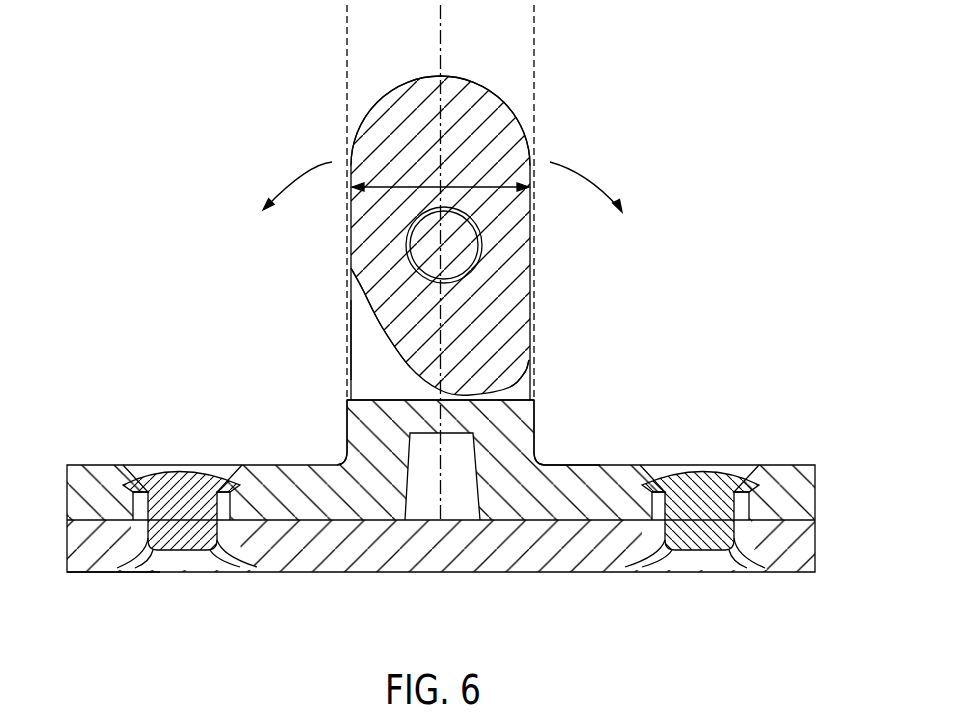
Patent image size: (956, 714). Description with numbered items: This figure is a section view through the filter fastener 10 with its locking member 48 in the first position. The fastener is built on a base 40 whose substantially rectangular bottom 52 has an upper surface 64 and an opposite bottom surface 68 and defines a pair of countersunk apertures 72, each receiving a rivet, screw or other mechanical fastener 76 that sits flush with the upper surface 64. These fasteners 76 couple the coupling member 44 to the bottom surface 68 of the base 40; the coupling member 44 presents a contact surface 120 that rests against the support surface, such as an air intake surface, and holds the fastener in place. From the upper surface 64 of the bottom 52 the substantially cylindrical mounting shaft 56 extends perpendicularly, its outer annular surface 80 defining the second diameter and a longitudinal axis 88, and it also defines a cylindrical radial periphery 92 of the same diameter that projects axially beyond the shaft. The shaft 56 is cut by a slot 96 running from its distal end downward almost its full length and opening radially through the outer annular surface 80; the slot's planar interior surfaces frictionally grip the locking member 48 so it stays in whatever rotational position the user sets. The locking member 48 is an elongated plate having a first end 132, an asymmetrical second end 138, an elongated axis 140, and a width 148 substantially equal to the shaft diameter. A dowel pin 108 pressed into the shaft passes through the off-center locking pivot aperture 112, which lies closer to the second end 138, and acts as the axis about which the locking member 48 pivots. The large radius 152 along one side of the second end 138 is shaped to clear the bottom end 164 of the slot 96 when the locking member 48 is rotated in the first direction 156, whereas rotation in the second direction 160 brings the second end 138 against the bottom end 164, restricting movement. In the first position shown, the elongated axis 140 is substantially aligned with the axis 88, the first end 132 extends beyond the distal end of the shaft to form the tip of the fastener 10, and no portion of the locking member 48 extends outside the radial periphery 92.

The filter fastener 10 is at (630, 68).
The base 40 is at (300, 475).
The coupling member 44 is at (805, 545).
The locking member 48 is at (457, 88).
The bottom 52 is at (587, 473).
The mounting shaft 56 is at (362, 331).
The upper surface 64 is at (90, 461).
The bottom surface 68 is at (103, 533).
The aperture 72 is at (119, 474).
The fastener 76 is at (185, 538).
The outer annular surface 80 is at (302, 299).
The longitudinal axis 88 is at (449, 23).
The radial periphery 92 is at (540, 88).
The slot 96 is at (355, 374).
The dowel pin 108 is at (472, 247).
The locking pivot aperture 112 is at (353, 268).
The contact surface 120 is at (426, 580).
The first end 132 is at (495, 93).
The second end 138 is at (517, 386).
The elongated axis 140 is at (437, 62).
The width 148 is at (490, 183).
The radius 152 is at (360, 293).
The first direction 156 is at (303, 172).
The second direction 160 is at (583, 177).
The bottom end 164 is at (402, 399).